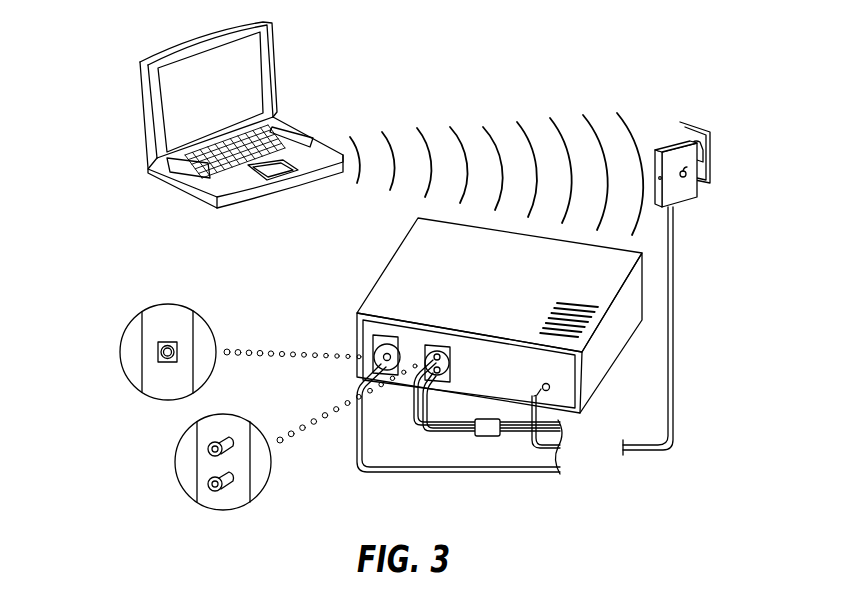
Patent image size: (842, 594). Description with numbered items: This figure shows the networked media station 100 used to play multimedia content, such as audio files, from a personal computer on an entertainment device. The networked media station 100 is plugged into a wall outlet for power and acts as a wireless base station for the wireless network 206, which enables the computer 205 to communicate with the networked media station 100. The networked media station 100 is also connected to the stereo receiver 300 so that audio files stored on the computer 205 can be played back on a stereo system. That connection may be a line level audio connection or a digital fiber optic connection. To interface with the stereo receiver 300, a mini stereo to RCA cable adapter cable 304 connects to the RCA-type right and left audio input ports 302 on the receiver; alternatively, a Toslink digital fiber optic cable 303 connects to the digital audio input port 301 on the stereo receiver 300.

The computer 205 is at (140, 88).
The wireless network 206 is at (493, 144).
The networked media station 100 is at (687, 207).
The stereo receiver 300 is at (607, 352).
The digital audio input port 301 is at (120, 353).
The RCA-type right and left audio input ports 302 is at (175, 463).
The Toslink digital fiber optic cable 303 is at (443, 473).
The mini stereo to RCA cable adapter cable 304 is at (548, 450).